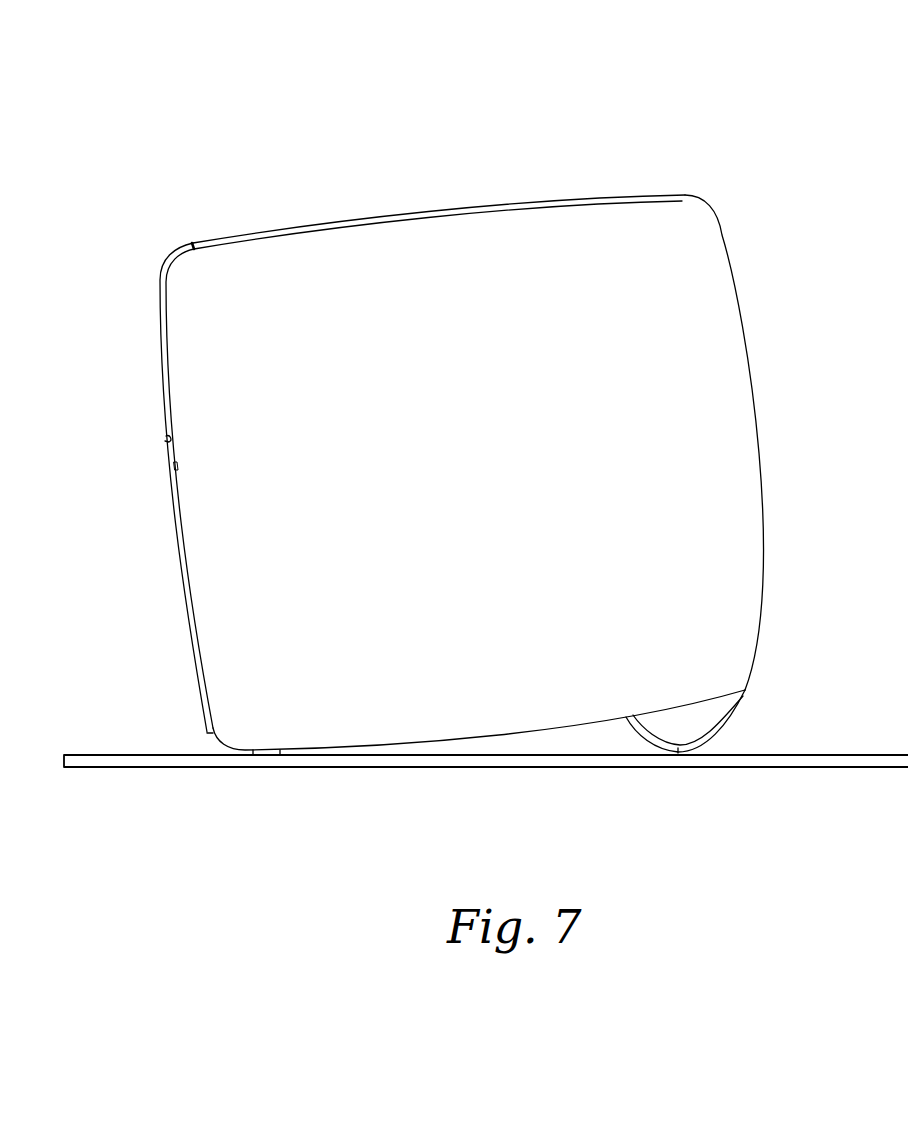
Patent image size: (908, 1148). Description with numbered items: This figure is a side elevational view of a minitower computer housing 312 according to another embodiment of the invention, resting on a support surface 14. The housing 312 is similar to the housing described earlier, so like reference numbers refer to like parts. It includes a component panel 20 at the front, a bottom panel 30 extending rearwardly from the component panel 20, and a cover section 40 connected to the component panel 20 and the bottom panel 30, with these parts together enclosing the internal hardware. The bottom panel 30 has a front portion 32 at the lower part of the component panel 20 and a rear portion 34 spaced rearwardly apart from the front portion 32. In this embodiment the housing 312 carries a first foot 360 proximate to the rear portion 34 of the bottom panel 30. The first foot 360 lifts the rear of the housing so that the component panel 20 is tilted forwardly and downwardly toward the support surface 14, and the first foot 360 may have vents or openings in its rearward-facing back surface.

The support surface 14 is at (105, 755).
The component panel 20 is at (172, 485).
The bottom panel 30 is at (507, 732).
The front portion 32 is at (325, 747).
The rear portion 34 is at (627, 722).
The cover section 40 is at (698, 252).
The minitower computer housing 312 is at (416, 170).
The first foot 360 is at (722, 722).